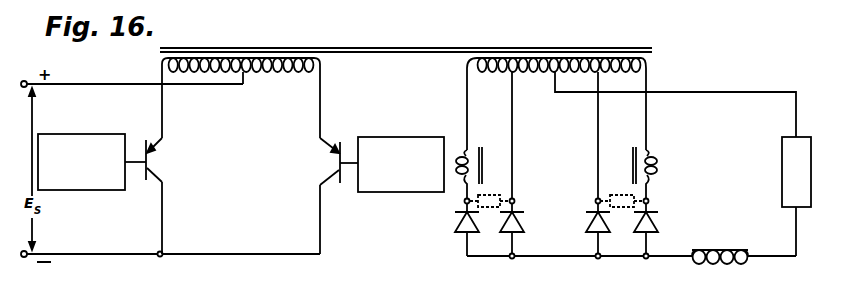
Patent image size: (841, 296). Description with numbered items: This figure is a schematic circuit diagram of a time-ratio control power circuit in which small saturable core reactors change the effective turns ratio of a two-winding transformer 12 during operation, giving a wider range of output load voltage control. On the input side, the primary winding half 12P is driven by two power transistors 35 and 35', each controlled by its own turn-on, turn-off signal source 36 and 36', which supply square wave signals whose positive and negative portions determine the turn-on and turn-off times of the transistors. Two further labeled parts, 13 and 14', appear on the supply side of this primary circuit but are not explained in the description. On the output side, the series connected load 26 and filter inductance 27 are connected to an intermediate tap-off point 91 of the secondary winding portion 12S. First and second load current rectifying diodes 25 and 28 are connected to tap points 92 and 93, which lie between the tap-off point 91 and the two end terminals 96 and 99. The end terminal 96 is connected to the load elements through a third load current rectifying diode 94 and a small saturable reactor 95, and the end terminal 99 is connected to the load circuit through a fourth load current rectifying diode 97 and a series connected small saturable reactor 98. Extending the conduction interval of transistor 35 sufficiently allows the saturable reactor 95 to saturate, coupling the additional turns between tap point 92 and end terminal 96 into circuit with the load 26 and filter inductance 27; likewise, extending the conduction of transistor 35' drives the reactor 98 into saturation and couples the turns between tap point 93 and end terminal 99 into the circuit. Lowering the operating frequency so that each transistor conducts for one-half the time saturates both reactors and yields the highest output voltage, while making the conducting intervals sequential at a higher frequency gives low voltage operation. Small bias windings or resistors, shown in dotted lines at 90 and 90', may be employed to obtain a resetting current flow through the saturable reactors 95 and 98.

The two-winding transformer 12 is at (405, 87).
The primary winding half 12P is at (284, 75).
The secondary winding portion 12S is at (578, 76).
The positive supply conductor 13 is at (128, 80).
The negative supply conductor 14' is at (173, 266).
The first load current rectifying diode 25 is at (516, 224).
The load 26 is at (782, 157).
The filter inductance 27 is at (720, 250).
The second load current rectifying diode 28 is at (592, 226).
The power transistor 35 is at (143, 196).
The power transistor 35' is at (339, 196).
The turn-on, turn-off signal source 36 is at (81, 176).
The turn-on, turn-off signal source 36' is at (401, 178).
The bias winding or resistor 90 is at (490, 186).
The bias winding or resistor 90' is at (622, 186).
The intermediate tap-off point 91 is at (553, 76).
The tap point 92 is at (510, 76).
The tap point 93 is at (600, 78).
The third load current rectifying diode 94 is at (462, 226).
The small saturable reactor 95 is at (470, 153).
The end terminal 96 is at (468, 72).
The fourth load current rectifying diode 97 is at (642, 226).
The small saturable reactor 98 is at (657, 165).
The end terminal 99 is at (648, 72).